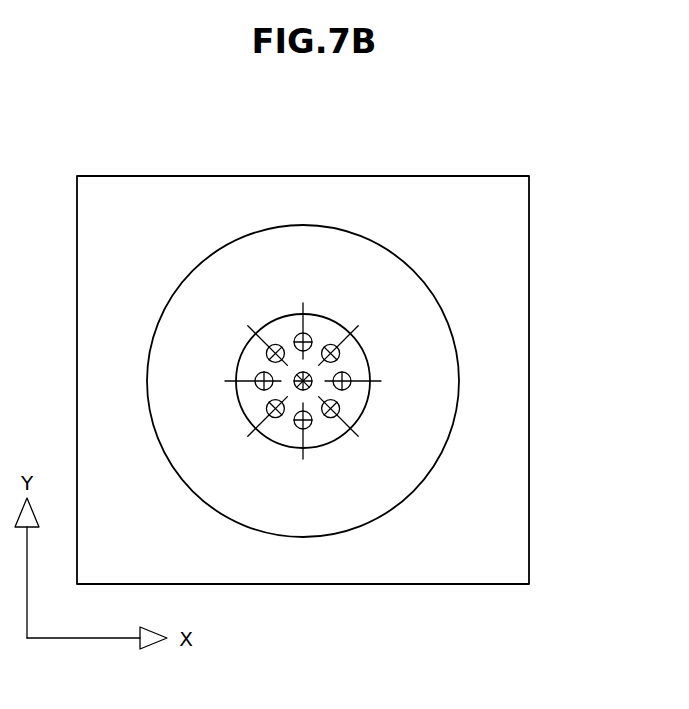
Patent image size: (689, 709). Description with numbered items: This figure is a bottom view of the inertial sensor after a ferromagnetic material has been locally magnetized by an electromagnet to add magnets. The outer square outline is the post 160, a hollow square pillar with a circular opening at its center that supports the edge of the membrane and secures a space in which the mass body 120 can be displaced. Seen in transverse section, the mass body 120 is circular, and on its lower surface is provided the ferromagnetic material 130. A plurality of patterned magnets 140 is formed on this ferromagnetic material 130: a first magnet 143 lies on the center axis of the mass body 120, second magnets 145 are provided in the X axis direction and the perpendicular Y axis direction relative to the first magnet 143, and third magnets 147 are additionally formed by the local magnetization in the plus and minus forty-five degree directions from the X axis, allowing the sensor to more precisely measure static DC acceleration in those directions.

The mass body 120 is at (378, 345).
The ferromagnetic material 130 is at (365, 360).
The patterned magnets 140 is at (350, 505).
The first magnet 143 is at (309, 390).
The second magnets 145 is at (297, 430).
The third magnets 147 is at (271, 345).
The post 160 is at (500, 372).